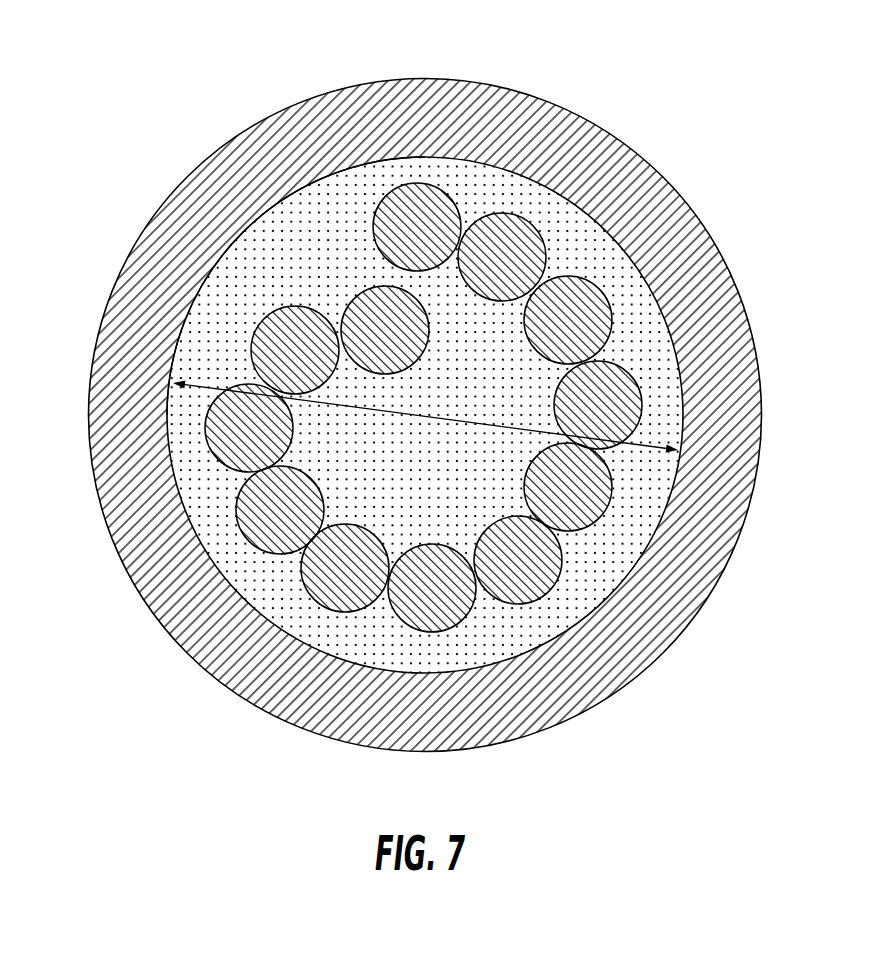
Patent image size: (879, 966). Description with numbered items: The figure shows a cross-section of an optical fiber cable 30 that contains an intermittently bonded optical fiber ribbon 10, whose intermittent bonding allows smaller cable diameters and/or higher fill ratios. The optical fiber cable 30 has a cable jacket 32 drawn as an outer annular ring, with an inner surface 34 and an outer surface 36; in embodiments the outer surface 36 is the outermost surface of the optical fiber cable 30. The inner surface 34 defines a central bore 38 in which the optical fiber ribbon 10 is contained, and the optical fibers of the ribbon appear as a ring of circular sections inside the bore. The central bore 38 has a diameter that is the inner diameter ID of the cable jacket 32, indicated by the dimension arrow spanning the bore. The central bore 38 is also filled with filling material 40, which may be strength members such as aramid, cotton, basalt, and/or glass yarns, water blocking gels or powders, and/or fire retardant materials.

The optical fiber cable 30 is at (97, 104).
The intermittently bonded optical fiber ribbon 10 is at (472, 192).
The cable jacket 32 is at (664, 203).
The inner surface 34 is at (641, 548).
The outer surface 36 is at (558, 719).
The central bore 38 is at (280, 592).
The filling material 40 is at (212, 497).
The inner diameter ID is at (661, 442).